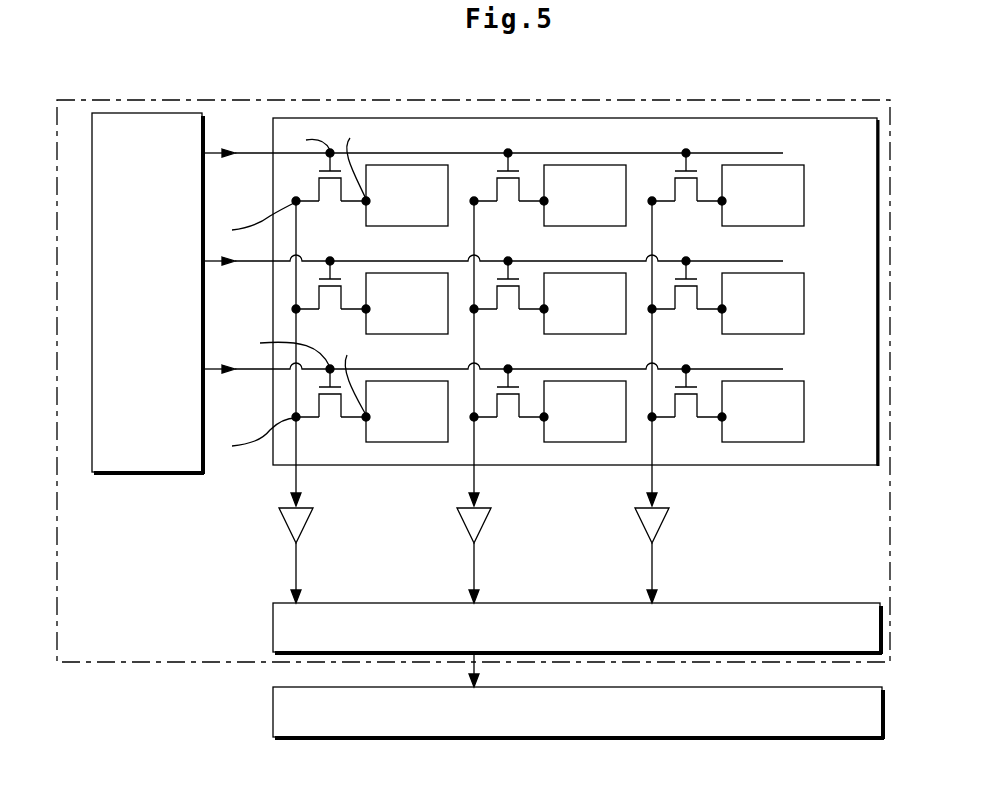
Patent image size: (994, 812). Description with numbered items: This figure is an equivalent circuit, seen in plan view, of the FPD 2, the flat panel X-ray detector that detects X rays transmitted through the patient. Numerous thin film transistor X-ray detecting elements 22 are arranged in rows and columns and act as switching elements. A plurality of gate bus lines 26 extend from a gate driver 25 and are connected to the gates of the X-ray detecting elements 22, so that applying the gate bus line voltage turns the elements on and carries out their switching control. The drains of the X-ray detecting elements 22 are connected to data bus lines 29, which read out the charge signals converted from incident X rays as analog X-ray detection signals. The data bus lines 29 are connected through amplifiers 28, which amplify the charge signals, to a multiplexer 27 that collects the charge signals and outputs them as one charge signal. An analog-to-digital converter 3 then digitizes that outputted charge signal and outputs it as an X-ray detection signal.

The FPD 2 is at (74, 129).
The analog-to-digital converter 3 is at (273, 712).
The X-ray detecting element 22 is at (338, 131).
The gate driver 25 is at (148, 460).
The gate bus line 26 is at (255, 158).
The multiplexer 27 is at (273, 626).
The amplifier 28 is at (296, 528).
The data bus line 29 is at (296, 482).